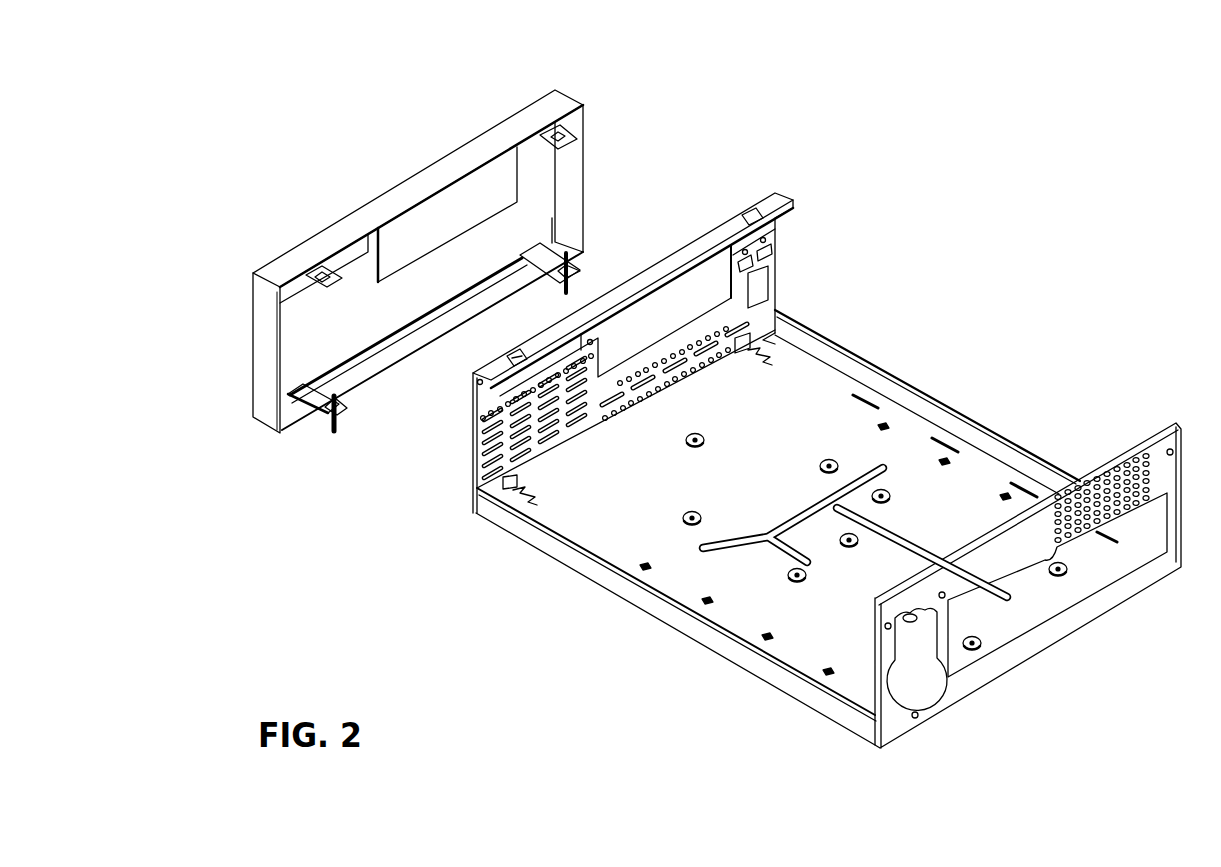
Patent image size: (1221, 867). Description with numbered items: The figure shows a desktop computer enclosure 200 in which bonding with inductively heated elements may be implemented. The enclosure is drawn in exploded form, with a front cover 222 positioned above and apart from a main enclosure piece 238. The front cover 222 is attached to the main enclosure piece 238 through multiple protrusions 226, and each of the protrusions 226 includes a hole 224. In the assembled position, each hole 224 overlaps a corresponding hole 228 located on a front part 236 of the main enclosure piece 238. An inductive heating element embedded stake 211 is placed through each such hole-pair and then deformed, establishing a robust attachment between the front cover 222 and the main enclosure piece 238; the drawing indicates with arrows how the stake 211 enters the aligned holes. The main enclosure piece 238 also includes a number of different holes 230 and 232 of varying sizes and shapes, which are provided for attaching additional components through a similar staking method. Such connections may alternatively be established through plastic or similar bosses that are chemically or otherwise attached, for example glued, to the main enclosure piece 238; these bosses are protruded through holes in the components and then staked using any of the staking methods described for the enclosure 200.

The computer enclosure 200 is at (1082, 116).
The front cover 222 is at (388, 173).
The hole 224 is at (440, 321).
The protrusion 226 is at (316, 403).
The inductive heating element embedded stake 211 is at (558, 288).
The hole 228 is at (510, 352).
The front part 236 is at (698, 249).
The main enclosure piece 238 is at (975, 405).
The hole 232 is at (822, 467).
The hole 230 is at (825, 668).